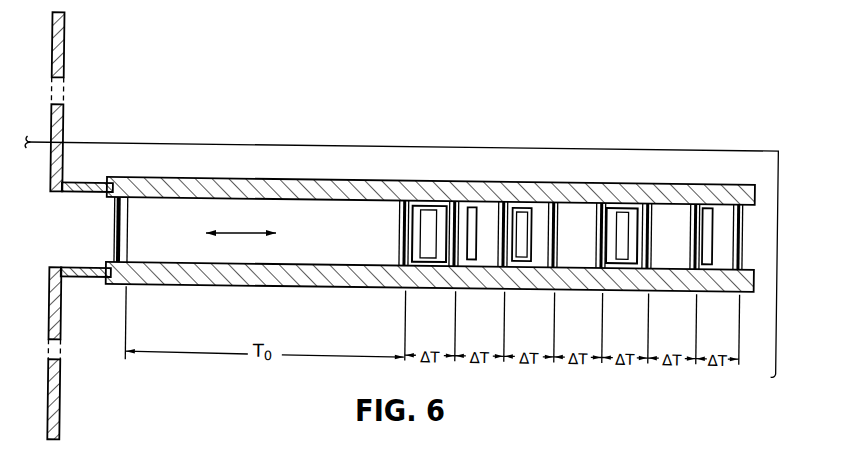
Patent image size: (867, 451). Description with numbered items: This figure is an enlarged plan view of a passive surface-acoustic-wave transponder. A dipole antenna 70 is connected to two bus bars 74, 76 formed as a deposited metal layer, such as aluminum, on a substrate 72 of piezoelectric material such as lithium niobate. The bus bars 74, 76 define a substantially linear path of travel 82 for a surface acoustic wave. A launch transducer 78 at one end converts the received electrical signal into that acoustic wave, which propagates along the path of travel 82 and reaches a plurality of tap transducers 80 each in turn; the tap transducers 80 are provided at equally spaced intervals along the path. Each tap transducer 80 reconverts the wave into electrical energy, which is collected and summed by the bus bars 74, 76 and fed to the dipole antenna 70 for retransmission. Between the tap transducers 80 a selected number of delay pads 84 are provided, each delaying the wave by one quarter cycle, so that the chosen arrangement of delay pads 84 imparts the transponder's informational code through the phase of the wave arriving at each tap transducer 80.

The dipole antenna 70 is at (51, 189).
The substrate 72 is at (663, 164).
The bus bar 74 is at (205, 187).
The bus bar 76 is at (213, 275).
The launch transducer 78 is at (123, 181).
The tap transducers 80 is at (405, 205).
The path of travel 82 is at (243, 231).
The delay pads 84 is at (470, 254).